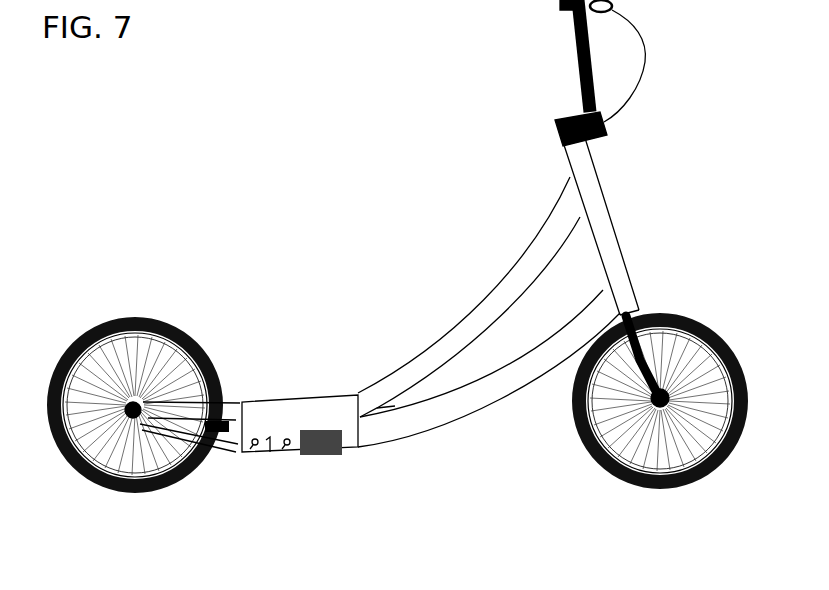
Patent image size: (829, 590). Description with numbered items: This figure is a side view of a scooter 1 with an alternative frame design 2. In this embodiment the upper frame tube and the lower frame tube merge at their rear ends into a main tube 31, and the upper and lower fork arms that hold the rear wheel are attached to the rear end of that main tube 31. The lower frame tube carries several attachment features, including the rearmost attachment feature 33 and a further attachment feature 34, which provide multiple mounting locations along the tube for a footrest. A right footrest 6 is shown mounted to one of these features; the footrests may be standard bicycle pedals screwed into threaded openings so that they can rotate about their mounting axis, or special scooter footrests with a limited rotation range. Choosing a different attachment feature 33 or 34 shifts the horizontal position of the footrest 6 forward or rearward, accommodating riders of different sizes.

The scooter 1 is at (321, 297).
The frame 2 is at (440, 338).
The right footrest 6 is at (317, 455).
The main tube 31 is at (265, 452).
The attachment feature 33 is at (250, 448).
The attachment feature 34 is at (282, 453).